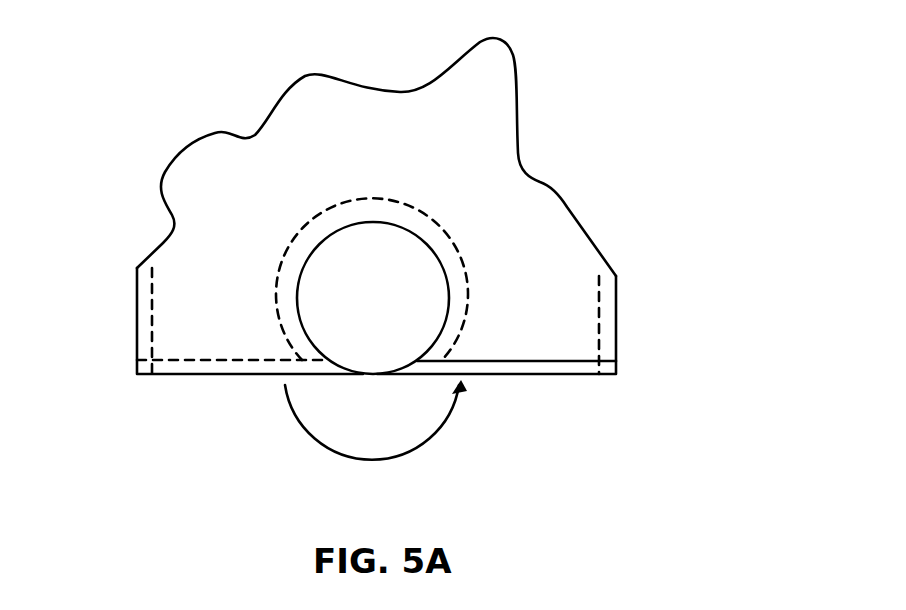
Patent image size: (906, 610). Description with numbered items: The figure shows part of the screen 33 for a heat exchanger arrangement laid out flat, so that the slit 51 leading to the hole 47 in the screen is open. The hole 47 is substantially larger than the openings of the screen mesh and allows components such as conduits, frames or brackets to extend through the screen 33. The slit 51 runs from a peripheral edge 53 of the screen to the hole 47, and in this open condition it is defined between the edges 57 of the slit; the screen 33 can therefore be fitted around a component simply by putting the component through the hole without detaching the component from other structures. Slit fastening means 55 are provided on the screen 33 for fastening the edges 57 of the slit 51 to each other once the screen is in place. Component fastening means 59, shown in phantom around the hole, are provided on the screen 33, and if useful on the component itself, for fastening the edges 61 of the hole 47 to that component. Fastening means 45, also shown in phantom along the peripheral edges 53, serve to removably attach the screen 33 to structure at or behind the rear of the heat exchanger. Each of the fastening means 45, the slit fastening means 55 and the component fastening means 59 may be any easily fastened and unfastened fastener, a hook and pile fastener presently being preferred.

The screen 33 is at (213, 190).
The fastening means 45 is at (140, 345).
The hole 47 is at (328, 307).
The slit 51 is at (378, 424).
The peripheral edges 53 is at (137, 330).
The slit fastening means 55 is at (218, 361).
The edges of the slit 57 is at (168, 374).
The component fastening means 59 is at (445, 216).
The edges of the hole 61 is at (449, 282).